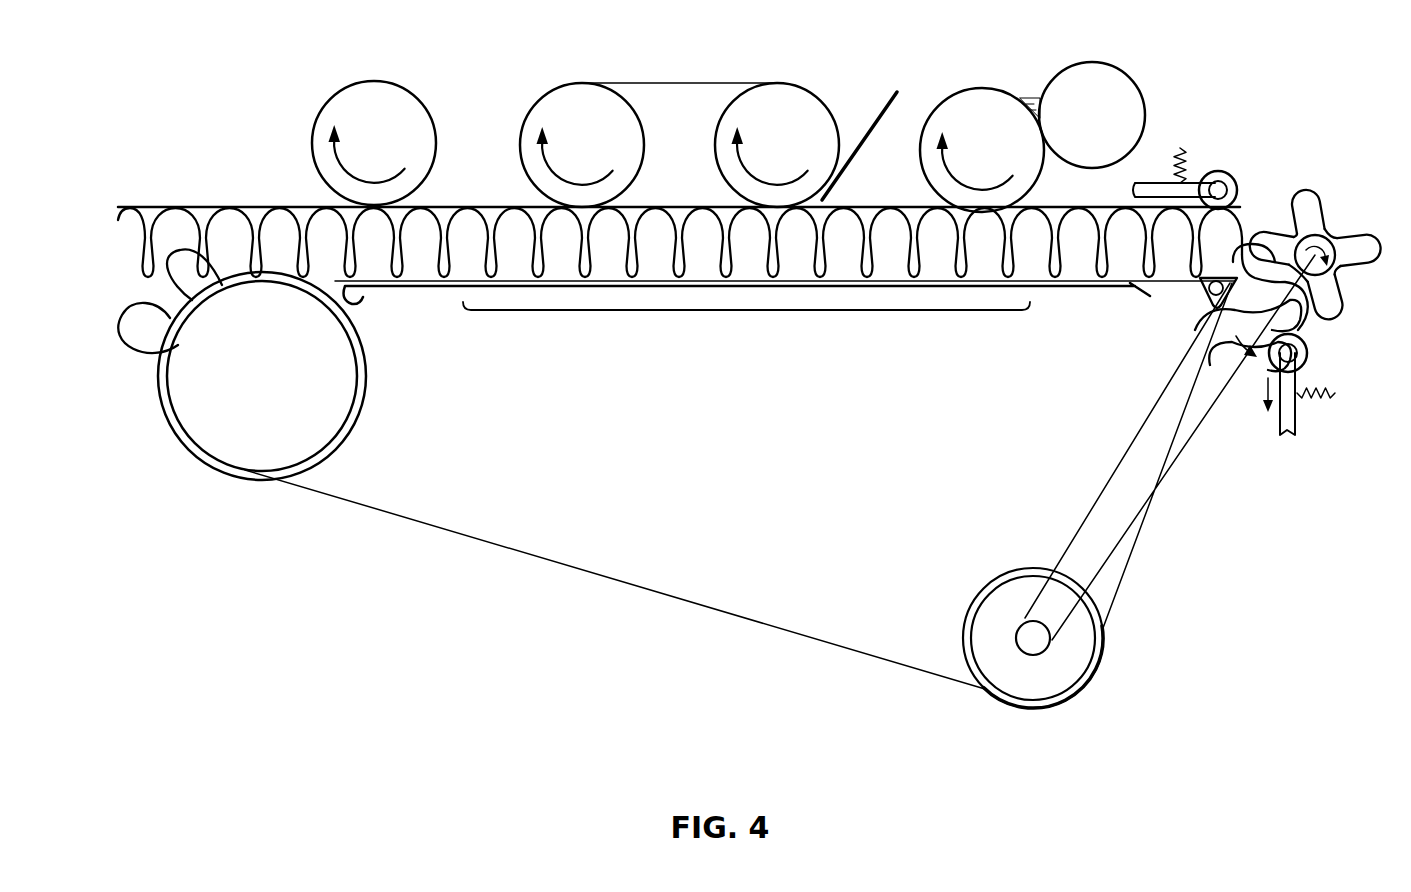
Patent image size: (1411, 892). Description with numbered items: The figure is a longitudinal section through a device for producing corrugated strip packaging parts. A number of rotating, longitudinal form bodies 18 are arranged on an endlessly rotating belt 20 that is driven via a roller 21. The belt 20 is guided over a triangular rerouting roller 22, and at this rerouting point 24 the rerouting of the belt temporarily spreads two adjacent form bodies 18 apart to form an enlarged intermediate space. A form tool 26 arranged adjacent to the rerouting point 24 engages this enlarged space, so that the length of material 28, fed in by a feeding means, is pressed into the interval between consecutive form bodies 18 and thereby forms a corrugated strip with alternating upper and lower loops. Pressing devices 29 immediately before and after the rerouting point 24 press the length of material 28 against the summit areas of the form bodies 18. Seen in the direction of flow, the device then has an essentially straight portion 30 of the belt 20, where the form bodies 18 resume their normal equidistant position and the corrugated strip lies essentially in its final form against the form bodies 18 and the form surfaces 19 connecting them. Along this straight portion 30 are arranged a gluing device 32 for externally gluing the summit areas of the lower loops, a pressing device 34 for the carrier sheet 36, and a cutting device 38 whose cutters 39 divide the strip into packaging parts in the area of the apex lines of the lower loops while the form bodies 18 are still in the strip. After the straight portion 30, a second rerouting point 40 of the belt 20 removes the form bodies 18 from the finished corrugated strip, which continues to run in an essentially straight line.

The form bodies 18 is at (1205, 362).
The form surfaces 19 is at (1195, 335).
The endlessly rotating belt 20 is at (615, 578).
The roller 21 is at (300, 418).
The triangular rerouting roller 22 is at (1200, 285).
The rerouting point 24 is at (1262, 232).
The form tool 26 is at (1322, 240).
The length of material 28 is at (1270, 390).
The pressing devices 29 is at (1222, 176).
The straight portion 30 is at (750, 310).
The gluing device 32 is at (998, 112).
The pressing device 34 is at (598, 118).
The carrier sheet 36 is at (872, 112).
The cutting device 38 is at (397, 118).
The cutters 39 is at (378, 198).
The second rerouting point 40 is at (126, 281).